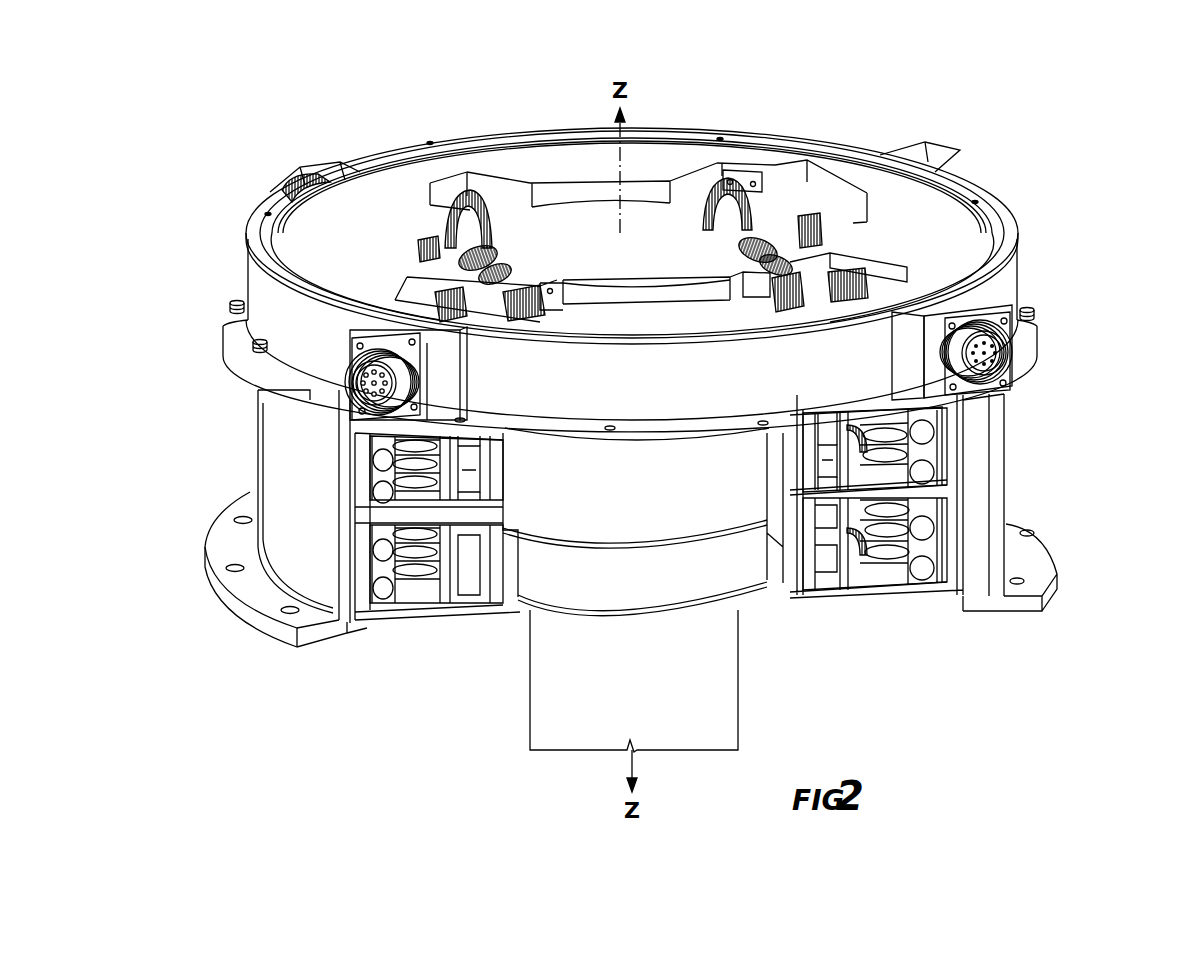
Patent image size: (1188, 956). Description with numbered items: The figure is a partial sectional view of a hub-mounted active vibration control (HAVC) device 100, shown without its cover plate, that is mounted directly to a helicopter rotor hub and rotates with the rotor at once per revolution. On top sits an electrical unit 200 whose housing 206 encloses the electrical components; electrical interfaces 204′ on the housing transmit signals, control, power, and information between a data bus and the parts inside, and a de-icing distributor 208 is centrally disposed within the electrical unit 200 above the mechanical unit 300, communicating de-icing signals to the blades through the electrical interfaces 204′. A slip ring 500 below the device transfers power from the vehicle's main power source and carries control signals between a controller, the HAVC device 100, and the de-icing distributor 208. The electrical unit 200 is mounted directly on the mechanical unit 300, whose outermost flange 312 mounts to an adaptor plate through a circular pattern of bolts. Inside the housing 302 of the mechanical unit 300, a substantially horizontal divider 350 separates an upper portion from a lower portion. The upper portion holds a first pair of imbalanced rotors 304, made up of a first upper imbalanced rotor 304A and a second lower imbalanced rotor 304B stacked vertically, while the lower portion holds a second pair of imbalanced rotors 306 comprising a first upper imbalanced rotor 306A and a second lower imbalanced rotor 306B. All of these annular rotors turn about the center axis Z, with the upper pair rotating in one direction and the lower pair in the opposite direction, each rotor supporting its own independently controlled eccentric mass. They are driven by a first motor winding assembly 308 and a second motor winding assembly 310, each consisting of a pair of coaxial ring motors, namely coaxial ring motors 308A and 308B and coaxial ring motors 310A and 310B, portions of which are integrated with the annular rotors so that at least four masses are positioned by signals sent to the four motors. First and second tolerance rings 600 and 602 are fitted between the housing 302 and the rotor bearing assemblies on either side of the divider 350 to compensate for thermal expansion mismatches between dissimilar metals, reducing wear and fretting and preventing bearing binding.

The hub-mounted active vibration control (HAVC) device 100 is at (290, 133).
The electrical unit 200 is at (223, 310).
The electrical interfaces 204′ is at (992, 352).
The housing 206 is at (1010, 303).
The de-icing distributor 208 is at (663, 223).
The mechanical unit 300 is at (1063, 420).
The housing 302 is at (277, 503).
The first pair of imbalanced rotors 304 is at (414, 405).
The first upper imbalanced rotor 304A is at (458, 474).
The second lower imbalanced rotor 304B is at (470, 497).
The second pair of imbalanced rotors 306 is at (420, 626).
The first upper imbalanced rotor 306A is at (430, 568).
The second lower imbalanced rotor 306B is at (490, 590).
The first motor winding assembly 308 is at (509, 425).
The first coaxial ring motor 308A is at (440, 450).
The second coaxial ring motor 308B is at (462, 478).
The second motor winding assembly 310 is at (503, 572).
The first coaxial ring motor 310A is at (655, 548).
The second coaxial ring motor 310B is at (677, 600).
The outermost flange 312 is at (263, 623).
The divider 350 is at (370, 537).
The slip ring 500 is at (553, 713).
The first tolerance ring 600 is at (960, 443).
The second tolerance ring 602 is at (956, 521).